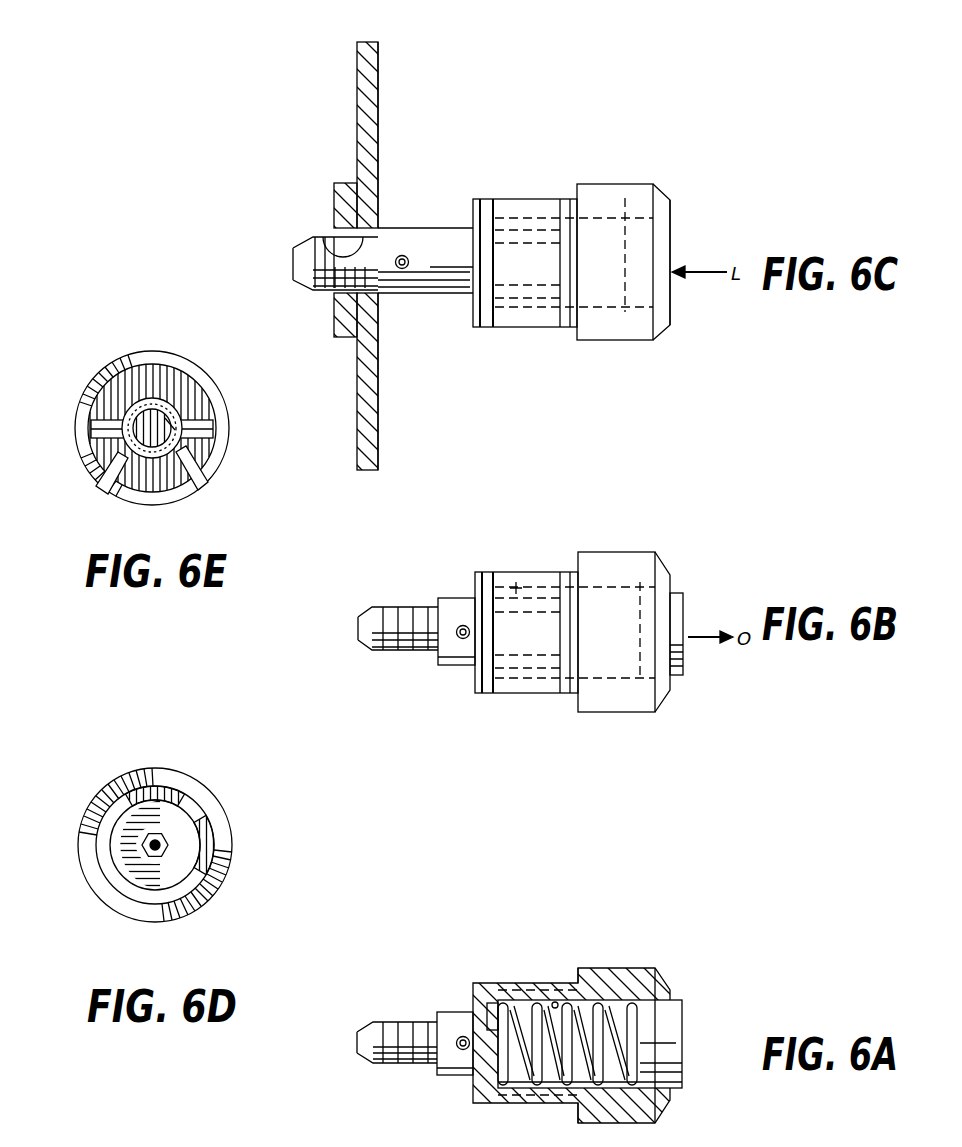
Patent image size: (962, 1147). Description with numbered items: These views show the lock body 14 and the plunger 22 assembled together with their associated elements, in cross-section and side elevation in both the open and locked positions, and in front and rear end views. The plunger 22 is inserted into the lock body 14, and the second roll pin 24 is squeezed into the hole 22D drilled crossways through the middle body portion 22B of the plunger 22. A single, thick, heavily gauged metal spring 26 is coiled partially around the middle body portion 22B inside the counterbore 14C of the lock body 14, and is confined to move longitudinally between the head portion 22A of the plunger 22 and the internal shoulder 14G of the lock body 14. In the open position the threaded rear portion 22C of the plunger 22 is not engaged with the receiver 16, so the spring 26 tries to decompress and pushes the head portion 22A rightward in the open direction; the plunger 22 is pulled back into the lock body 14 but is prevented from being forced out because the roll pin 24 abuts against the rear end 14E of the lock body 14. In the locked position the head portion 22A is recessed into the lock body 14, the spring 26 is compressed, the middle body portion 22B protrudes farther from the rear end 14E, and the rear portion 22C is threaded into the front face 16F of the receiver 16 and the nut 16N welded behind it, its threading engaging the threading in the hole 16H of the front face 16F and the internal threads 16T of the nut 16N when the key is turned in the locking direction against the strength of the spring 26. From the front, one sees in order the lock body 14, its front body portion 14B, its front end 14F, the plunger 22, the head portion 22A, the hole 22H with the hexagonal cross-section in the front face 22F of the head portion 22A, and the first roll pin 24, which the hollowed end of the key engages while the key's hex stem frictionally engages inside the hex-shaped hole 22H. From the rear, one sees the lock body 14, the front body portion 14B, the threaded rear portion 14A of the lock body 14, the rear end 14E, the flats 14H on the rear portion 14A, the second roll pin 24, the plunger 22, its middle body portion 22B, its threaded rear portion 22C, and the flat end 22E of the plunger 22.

In FIG. 6C, the lock body 14 is at (600, 185).
In FIG. 6B, the lock body 14 is at (612, 552).
In FIG. 6A, the lock body 14 is at (610, 968).
In FIG. 6E, the lock body 14 is at (228, 452).
In FIG. 6D, the lock body 14 is at (232, 873).
In FIG. 6E, the threaded rear portion of the lock body 14A is at (205, 373).
In FIG. 6E, the front body portion of the lock body 14B is at (222, 405).
In FIG. 6D, the front body portion of the lock body 14B is at (227, 840).
In FIG. 6A, the counterbore of the lock body 14C is at (557, 1007).
In FIG. 6C, the rear end of the lock body 14E is at (478, 200).
In FIG. 6B, the rear end of the lock body 14E is at (466, 612).
In FIG. 6E, the rear end of the lock body 14E is at (162, 385).
In FIG. 6D, the front end of the lock body 14F is at (207, 817).
In FIG. 6A, the internal shoulder of the lock body 14G is at (503, 1005).
In FIG. 6E, the flats on the rear portion 14H is at (87, 405).
In FIG. 6C, the receiver 16 is at (352, 44).
In FIG. 6C, the front face of the receiver 16F is at (378, 85).
In FIG. 6C, the hole in the front face 16H is at (338, 240).
In FIG. 6C, the nut of the receiver 16N is at (338, 183).
In FIG. 6C, the internal threads of the nut 16T is at (334, 232).
In FIG. 6C, the plunger 22 is at (641, 205).
In FIG. 6B, the plunger 22 is at (672, 592).
In FIG. 6A, the plunger 22 is at (673, 998).
In FIG. 6E, the plunger 22 is at (120, 455).
In FIG. 6D, the plunger 22 is at (185, 817).
In FIG. 6C, the head portion of the plunger 22A is at (668, 227).
In FIG. 6B, the head portion of the plunger 22A is at (685, 620).
In FIG. 6A, the head portion of the plunger 22A is at (665, 1022).
In FIG. 6D, the head portion of the plunger 22A is at (167, 795).
In FIG. 6C, the middle body portion of the plunger 22B is at (474, 236).
In FIG. 6B, the middle body portion of the plunger 22B is at (470, 600).
In FIG. 6A, the middle body portion of the plunger 22B is at (457, 1012).
In FIG. 6E, the middle body portion of the plunger 22B is at (140, 462).
In FIG. 6C, the threaded rear portion of the plunger 22C is at (302, 240).
In FIG. 6B, the threaded rear portion of the plunger 22C is at (385, 607).
In FIG. 6E, the threaded rear portion of the plunger 22C is at (152, 464).
In FIG. 6A, the hole in the middle body portion 22D is at (450, 1012).
In FIG. 6E, the flat end of the plunger 22E is at (180, 440).
In FIG. 6D, the front face of the head portion 22F is at (118, 853).
In FIG. 6D, the hole with hexagonal cross-section 22H is at (140, 872).
In FIG. 6C, the roll pin 24 is at (404, 255).
In FIG. 6B, the roll pin 24 is at (456, 658).
In FIG. 6A, the roll pin 24 is at (448, 1075).
In FIG. 6E, the roll pin 24 is at (97, 477).
In FIG. 6D, the roll pin 24 is at (165, 852).
In FIG. 6C, the spring 26 is at (548, 215).
In FIG. 6B, the spring 26 is at (520, 572).
In FIG. 6A, the spring 26 is at (487, 1030).